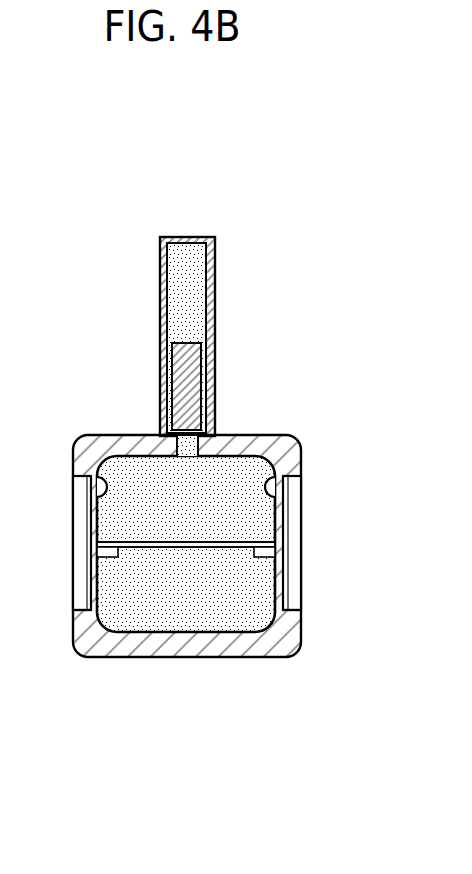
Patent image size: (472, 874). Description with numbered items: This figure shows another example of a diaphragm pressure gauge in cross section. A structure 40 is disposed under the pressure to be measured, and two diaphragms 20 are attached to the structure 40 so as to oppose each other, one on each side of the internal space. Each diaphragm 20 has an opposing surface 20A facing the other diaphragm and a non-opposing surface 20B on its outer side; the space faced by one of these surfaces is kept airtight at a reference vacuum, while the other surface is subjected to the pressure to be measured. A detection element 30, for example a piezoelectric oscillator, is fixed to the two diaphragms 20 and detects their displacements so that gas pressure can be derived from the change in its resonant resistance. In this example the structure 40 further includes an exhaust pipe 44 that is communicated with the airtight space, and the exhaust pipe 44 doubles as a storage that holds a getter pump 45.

The diaphragm 20 is at (88, 513).
The opposing surface 20A is at (96, 477).
The non-opposing surface 20B is at (88, 583).
The detection element 30 is at (183, 540).
The structure 40 is at (243, 657).
The exhaust pipe 44 is at (215, 313).
The getter pump 45 is at (193, 381).